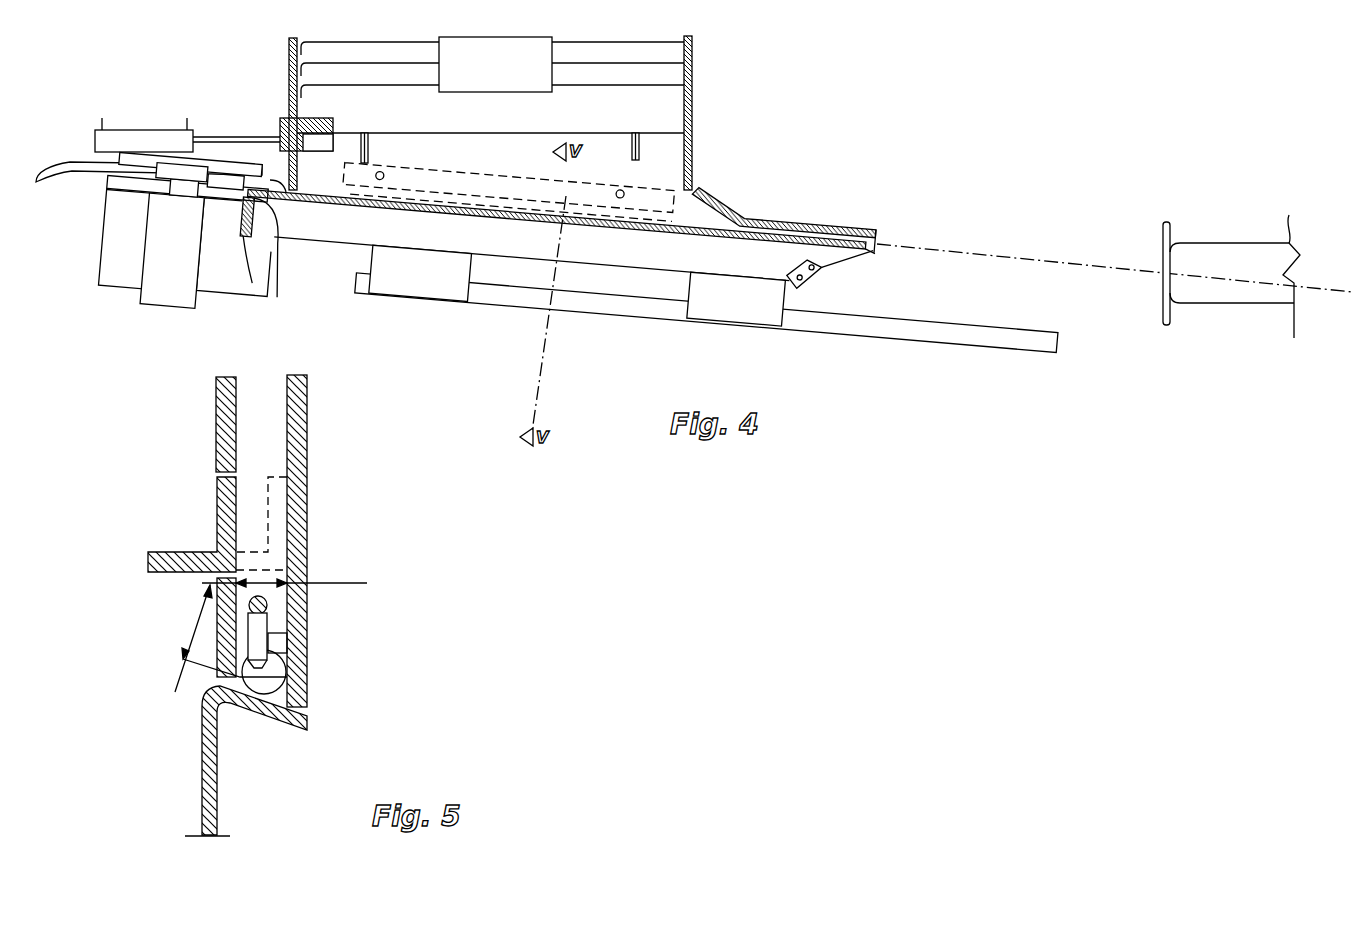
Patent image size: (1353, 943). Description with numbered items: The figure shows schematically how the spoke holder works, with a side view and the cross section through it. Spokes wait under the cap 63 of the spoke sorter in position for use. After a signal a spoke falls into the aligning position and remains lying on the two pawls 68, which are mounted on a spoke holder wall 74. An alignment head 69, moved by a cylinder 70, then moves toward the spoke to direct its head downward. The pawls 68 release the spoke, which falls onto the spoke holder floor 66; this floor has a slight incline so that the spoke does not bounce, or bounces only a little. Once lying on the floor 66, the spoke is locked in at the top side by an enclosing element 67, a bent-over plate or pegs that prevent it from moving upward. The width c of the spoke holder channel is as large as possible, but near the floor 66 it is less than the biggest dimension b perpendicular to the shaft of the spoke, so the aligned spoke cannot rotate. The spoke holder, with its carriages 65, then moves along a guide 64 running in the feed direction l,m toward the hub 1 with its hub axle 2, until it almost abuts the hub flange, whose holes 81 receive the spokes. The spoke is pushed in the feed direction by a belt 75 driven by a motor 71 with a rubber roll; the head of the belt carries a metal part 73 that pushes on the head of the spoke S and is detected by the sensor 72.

In FIG. 4, the hub 1 is at (1218, 250).
In FIG. 4, the hub axle 2 is at (1350, 273).
In FIG. 4, the cap 63 is at (492, 67).
In FIG. 4, the guide 64 is at (996, 345).
In FIG. 4, the carriages 65 is at (433, 283).
In FIG. 4, the spoke holder floor 66 is at (808, 225).
In FIG. 5, the spoke holder floor 66 is at (256, 705).
In FIG. 4, the enclosing element 67 is at (645, 185).
In FIG. 5, the enclosing element 67 is at (217, 498).
In FIG. 4, the pawls 68 is at (368, 142).
In FIG. 4, the alignment head 69 is at (282, 120).
In FIG. 4, the cylinder 70 is at (158, 130).
In FIG. 4, the motor 71 is at (172, 290).
In FIG. 4, the sensor 72 is at (278, 300).
In FIG. 4, the metal part 73 is at (289, 195).
In FIG. 5, the metal part 73 is at (289, 676).
In FIG. 4, the spoke holder wall 74 is at (490, 128).
In FIG. 5, the spoke holder wall 74 is at (307, 430).
In FIG. 4, the belt 75 is at (68, 160).
In FIG. 4, the holes 81 is at (1165, 275).
In FIG. 4, the feed direction l,m is at (1000, 245).
In FIG. 5, the spoke S is at (267, 636).
In FIG. 5, the width of the spoke holder channel c is at (284, 574).
In FIG. 5, the biggest dimension perpendicular to the shaft of the spoke b is at (217, 638).